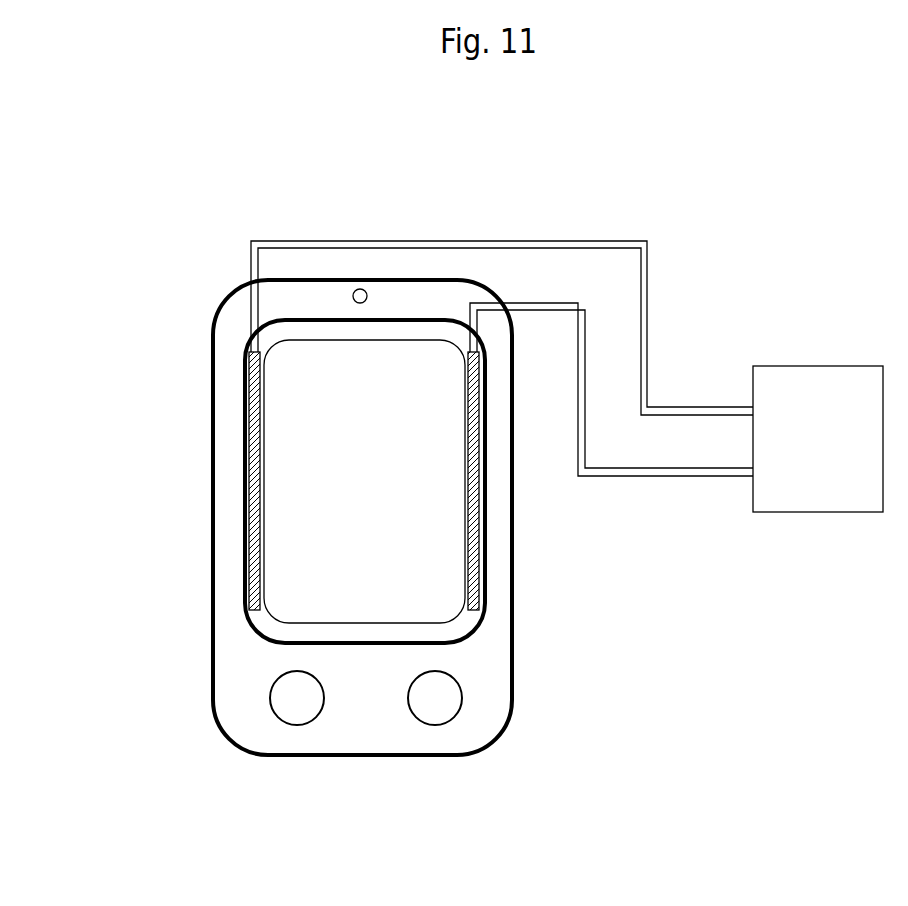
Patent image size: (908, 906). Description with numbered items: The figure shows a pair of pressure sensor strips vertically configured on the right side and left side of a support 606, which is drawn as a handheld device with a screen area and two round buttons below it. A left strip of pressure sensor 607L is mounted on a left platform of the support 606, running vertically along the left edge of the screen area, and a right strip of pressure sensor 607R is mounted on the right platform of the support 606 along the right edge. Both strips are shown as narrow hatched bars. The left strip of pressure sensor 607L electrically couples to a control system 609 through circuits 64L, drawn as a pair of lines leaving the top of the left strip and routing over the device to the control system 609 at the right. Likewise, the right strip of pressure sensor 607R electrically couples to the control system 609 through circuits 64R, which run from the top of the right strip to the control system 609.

The support 606 is at (373, 634).
The left strip of pressure sensor 607L is at (252, 497).
The right strip of pressure sensor 607R is at (472, 500).
The circuits 64L is at (653, 324).
The circuits 64R is at (628, 477).
The control system 609 is at (818, 439).